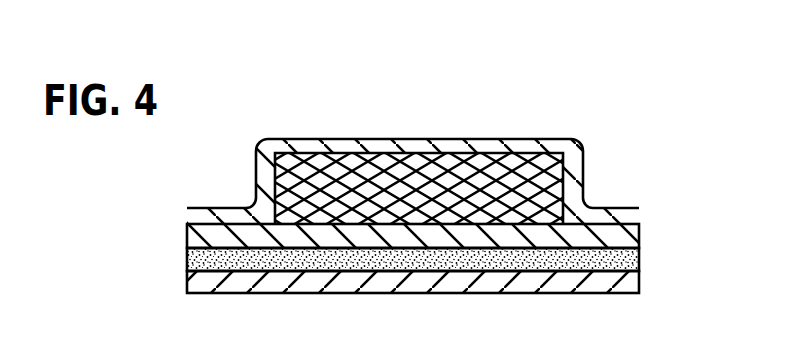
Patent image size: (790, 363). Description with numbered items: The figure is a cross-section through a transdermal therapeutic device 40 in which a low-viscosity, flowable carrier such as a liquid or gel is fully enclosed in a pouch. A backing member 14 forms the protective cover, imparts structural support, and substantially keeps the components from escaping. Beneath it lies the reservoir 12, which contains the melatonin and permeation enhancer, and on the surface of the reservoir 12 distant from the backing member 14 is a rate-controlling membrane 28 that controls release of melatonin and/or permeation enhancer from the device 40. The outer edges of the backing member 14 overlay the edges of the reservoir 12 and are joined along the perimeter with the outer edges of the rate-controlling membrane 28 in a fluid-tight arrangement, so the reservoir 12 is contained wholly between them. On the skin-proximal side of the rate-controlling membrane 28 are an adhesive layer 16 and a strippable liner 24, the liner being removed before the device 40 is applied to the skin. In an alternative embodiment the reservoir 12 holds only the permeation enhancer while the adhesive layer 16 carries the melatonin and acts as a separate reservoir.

The device 40 is at (468, 119).
The backing member 14 is at (570, 140).
The reservoir 12 is at (550, 188).
The rate-controlling membrane 28 is at (623, 237).
The adhesive layer 16 is at (627, 262).
The strippable liner 24 is at (632, 283).